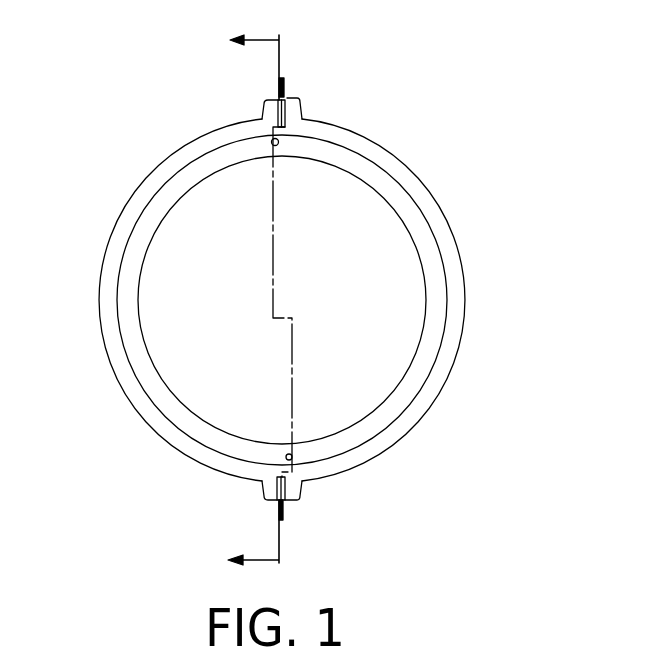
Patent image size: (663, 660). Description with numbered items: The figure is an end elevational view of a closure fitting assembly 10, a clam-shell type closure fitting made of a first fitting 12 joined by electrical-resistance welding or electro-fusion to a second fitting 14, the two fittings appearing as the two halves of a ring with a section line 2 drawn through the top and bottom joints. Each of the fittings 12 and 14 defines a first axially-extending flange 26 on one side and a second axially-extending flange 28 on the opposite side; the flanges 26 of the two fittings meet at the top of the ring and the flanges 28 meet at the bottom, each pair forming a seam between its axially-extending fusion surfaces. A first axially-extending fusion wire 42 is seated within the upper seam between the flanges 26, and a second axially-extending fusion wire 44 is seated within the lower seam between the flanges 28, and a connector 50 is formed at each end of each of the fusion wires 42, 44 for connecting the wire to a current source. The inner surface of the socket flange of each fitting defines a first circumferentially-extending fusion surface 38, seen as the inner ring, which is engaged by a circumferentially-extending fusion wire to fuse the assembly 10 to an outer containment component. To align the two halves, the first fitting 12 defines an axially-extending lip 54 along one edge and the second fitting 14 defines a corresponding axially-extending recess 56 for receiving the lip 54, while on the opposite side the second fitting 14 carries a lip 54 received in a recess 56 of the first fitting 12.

The section line 2- 2 is at (267, 301).
The closure fitting assembly 10 is at (422, 131).
The first fitting 12 is at (458, 255).
The second fitting 14 is at (100, 308).
The first axially-extending flange 26 is at (292, 98).
The second axially-extending flange 28 is at (300, 500).
The first circumferentially-extending fusion surface 38 is at (443, 267).
The first axially-extending fusion wire 42 is at (302, 117).
The second axially-extending fusion wire 44 is at (277, 489).
The connector 50 is at (285, 88).
The lip 54 is at (281, 150).
The recess 56 is at (272, 145).